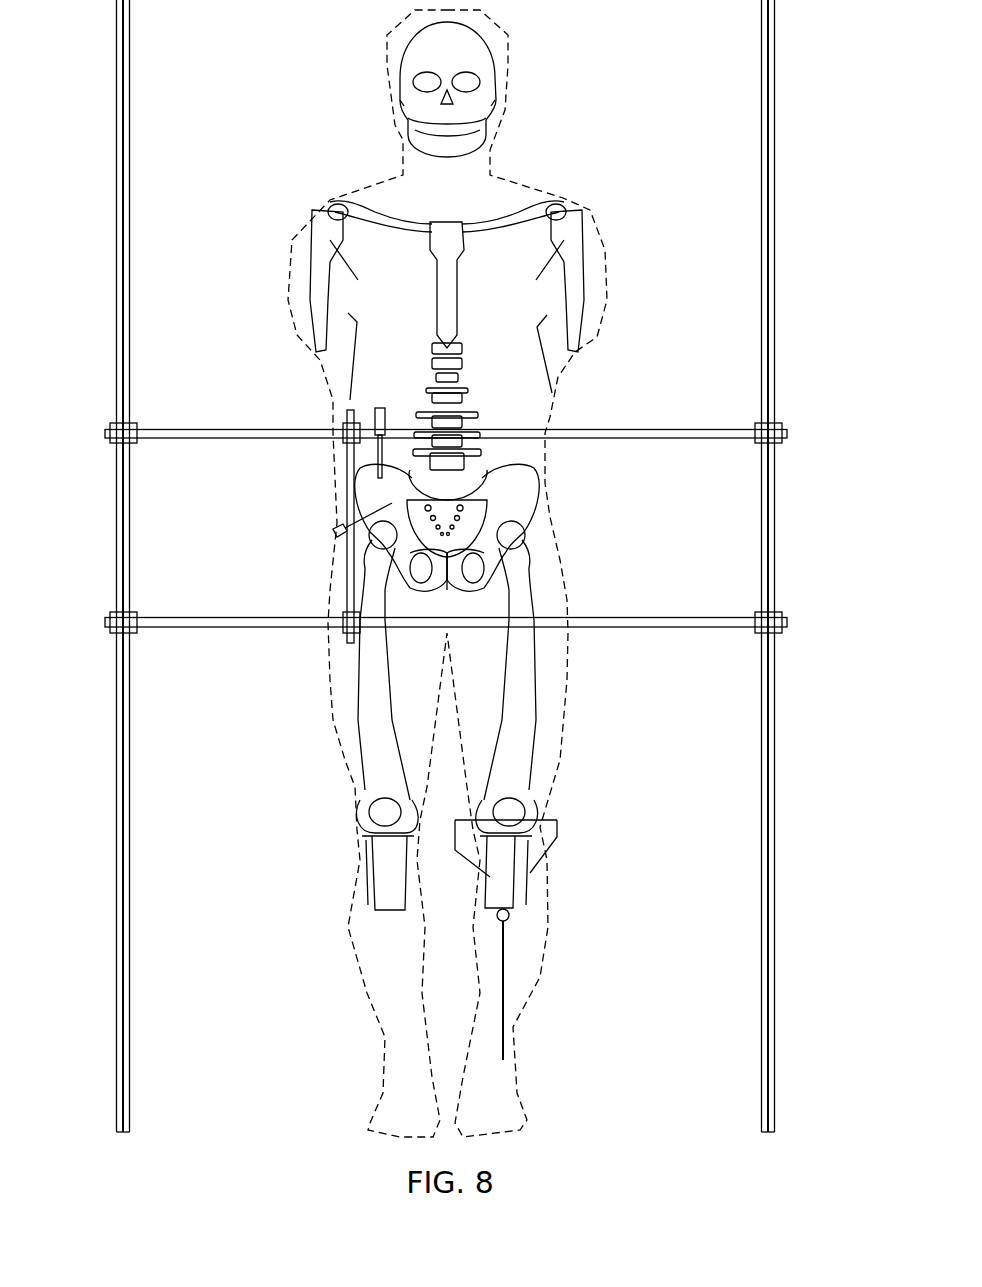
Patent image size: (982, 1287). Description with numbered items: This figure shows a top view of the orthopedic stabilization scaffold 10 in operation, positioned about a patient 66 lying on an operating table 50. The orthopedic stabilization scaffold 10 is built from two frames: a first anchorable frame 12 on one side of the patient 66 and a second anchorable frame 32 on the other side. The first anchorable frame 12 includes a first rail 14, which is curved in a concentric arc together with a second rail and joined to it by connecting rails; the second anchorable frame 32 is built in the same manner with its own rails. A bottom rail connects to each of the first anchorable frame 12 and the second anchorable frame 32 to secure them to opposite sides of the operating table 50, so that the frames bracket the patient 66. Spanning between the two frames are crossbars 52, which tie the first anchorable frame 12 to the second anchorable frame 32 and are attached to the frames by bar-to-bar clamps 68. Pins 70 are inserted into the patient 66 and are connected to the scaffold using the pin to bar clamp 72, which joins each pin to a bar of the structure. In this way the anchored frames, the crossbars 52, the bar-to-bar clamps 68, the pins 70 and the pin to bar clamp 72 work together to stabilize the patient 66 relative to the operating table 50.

The orthopedic stabilization scaffold 10 is at (446, 566).
The first anchorable frame 12 is at (88, 566).
The first rail 14 is at (116, 527).
The second anchorable frame 32 is at (789, 388).
The operating table 50 is at (619, 104).
The crossbars 52 is at (700, 429).
The patient 66 is at (488, 318).
The bar-to-bar clamps 68 is at (345, 425).
The pins 70 is at (368, 452).
The pin to bar clamp 72 is at (383, 406).